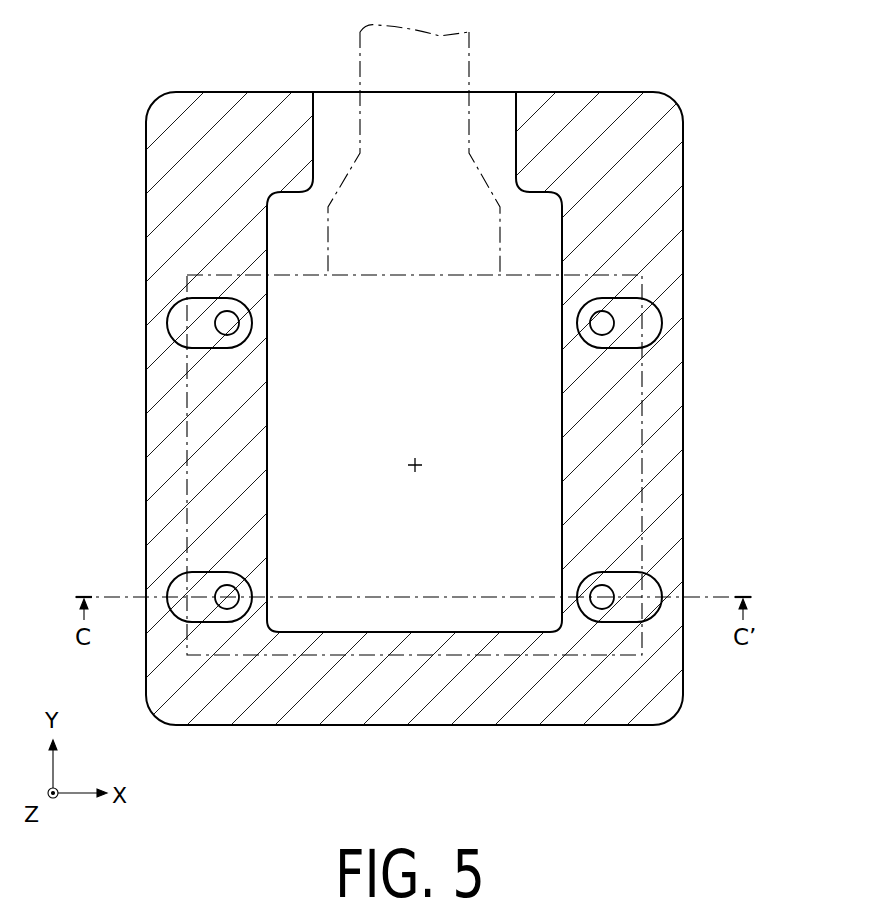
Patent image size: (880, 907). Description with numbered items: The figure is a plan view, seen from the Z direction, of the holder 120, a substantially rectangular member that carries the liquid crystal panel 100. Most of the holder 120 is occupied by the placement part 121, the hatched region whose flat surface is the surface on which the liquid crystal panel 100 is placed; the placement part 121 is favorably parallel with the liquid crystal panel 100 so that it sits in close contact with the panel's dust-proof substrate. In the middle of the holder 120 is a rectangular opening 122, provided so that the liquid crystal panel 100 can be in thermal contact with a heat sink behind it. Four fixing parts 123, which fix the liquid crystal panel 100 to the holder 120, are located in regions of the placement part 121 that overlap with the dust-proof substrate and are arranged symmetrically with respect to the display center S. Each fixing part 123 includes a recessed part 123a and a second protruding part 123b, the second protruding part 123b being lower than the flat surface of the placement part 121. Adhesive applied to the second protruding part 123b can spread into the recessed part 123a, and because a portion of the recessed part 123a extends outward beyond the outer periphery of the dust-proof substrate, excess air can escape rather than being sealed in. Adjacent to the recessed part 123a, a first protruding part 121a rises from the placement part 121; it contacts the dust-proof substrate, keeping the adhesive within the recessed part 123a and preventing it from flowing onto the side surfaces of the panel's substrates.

The holder 120 is at (440, 400).
The placement part 121 is at (248, 421).
The first protruding part 121a is at (264, 324).
The opening 122 is at (267, 357).
The fixing part 123 is at (414, 542).
The recessed part 123a is at (209, 616).
The second protruding part 123b is at (232, 585).
The liquid crystal panel 100 is at (645, 434).
The display center S is at (427, 454).